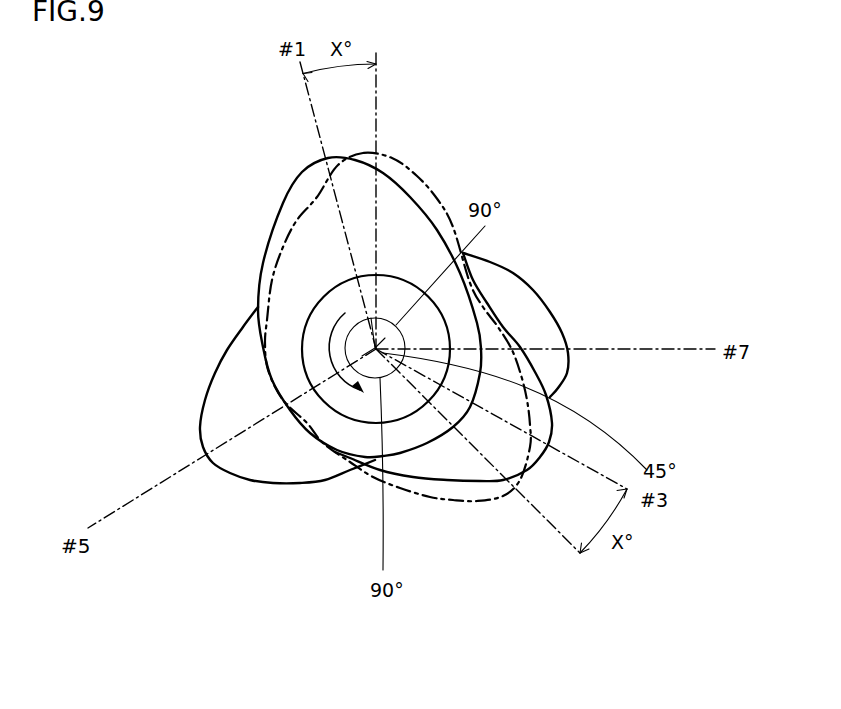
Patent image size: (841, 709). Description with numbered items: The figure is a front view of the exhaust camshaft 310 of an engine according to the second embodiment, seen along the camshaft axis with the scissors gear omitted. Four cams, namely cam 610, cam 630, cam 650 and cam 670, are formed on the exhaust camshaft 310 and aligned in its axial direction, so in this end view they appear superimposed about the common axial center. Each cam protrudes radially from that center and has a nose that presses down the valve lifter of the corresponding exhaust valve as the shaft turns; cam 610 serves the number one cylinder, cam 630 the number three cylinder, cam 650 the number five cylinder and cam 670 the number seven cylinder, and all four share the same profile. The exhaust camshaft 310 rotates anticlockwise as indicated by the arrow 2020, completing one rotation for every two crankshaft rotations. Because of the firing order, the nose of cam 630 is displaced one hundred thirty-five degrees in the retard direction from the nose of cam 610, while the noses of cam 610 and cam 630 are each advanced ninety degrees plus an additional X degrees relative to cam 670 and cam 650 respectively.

The arrow 2020 is at (345, 347).
The exhaust camshaft 310 is at (322, 297).
The cam 610 is at (278, 207).
The cam 630 is at (463, 502).
The cam 650 is at (205, 403).
The cam 670 is at (540, 293).